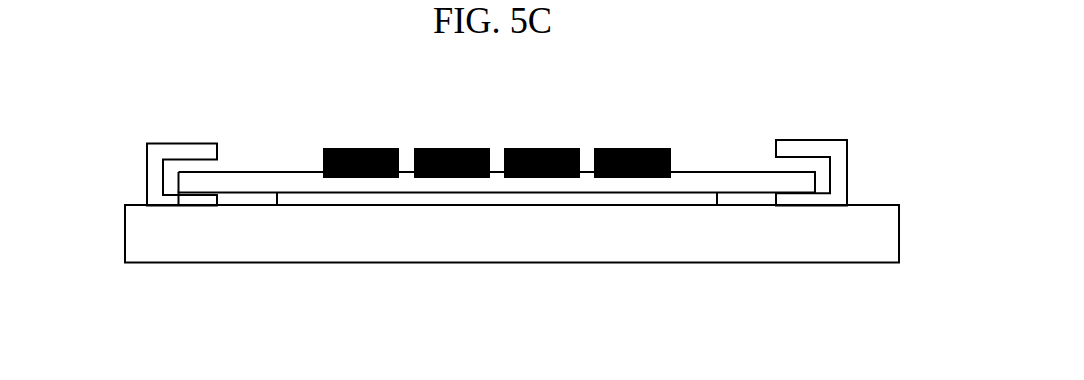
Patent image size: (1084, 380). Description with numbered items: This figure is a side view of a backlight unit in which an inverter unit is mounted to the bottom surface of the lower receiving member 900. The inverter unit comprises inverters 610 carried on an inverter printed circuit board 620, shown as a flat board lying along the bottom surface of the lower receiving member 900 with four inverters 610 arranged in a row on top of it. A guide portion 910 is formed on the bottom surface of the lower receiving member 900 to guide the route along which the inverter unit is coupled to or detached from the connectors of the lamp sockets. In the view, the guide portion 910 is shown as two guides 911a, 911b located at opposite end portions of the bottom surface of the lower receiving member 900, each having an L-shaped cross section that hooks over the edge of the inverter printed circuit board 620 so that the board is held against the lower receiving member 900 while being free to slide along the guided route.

The lower receiving member 900 is at (896, 263).
The guide portion 910 is at (498, 235).
The first guide 911a is at (155, 150).
The first guide 911b is at (839, 147).
The inverter printed circuit board 620 is at (183, 190).
The inverter 610 is at (358, 147).